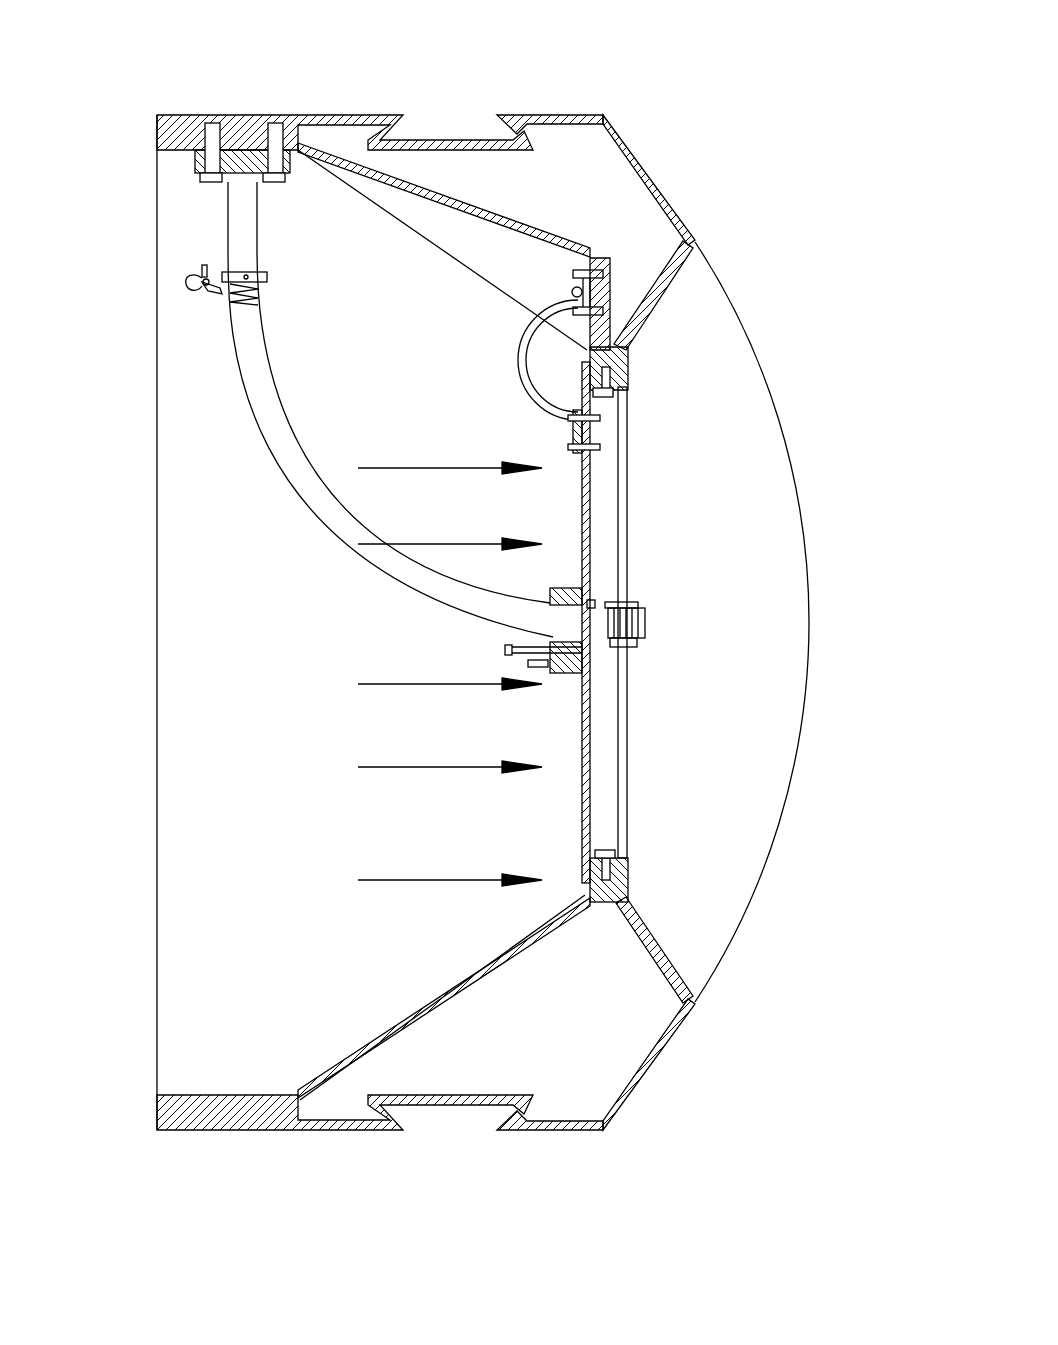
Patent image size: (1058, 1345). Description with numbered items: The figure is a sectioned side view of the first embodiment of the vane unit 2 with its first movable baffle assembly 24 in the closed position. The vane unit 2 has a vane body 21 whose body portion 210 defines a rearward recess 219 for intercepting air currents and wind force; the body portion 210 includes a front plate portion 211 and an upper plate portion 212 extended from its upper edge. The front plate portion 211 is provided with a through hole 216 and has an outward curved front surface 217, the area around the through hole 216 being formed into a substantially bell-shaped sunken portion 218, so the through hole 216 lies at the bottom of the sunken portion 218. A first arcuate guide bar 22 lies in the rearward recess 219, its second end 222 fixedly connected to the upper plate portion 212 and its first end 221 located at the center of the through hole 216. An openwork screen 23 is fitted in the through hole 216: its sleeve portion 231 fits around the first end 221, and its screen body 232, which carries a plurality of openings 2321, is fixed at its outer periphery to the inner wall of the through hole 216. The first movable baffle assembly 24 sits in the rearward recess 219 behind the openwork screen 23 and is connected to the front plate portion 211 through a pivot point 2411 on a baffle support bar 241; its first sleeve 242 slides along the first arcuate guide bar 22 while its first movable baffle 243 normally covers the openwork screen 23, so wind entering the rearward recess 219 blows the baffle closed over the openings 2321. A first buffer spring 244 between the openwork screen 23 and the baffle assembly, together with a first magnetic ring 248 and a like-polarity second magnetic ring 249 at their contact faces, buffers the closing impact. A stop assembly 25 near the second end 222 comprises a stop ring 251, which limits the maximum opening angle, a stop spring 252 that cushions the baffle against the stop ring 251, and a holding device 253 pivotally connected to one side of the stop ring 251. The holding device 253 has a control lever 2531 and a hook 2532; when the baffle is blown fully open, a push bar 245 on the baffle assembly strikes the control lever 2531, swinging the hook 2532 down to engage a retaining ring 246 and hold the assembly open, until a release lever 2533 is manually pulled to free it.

The vane unit 2 is at (652, 82).
The vane body 21 is at (702, 208).
The body portion 210 is at (660, 186).
The front plate portion 211 is at (632, 362).
The upper plate portion 212 is at (372, 115).
The through hole 216 is at (632, 392).
The outward curved front surface 217 is at (724, 292).
The sunken portion 218 is at (745, 430).
The rearward recess 219 is at (258, 548).
The first arcuate guide bar 22 is at (228, 380).
The first end 221 is at (646, 623).
The second end 222 is at (238, 190).
The openwork screen 23 is at (636, 558).
The sleeve portion 231 is at (636, 645).
The screen body 232 is at (634, 760).
The openings 2321 is at (626, 700).
The first movable baffle assembly 24 is at (574, 470).
The baffle support bar 241 is at (522, 340).
The pivot point 2411 is at (612, 292).
The first sleeve 242 is at (562, 590).
The first movable baffle 243 is at (594, 530).
The first buffer spring 244 is at (624, 606).
The push bar 245 is at (508, 649).
The retaining ring 246 is at (530, 663).
The first magnetic ring 248 is at (596, 600).
The second magnetic ring 249 is at (594, 660).
The stop assembly 25 is at (262, 276).
The stop ring 251 is at (268, 282).
The stop spring 252 is at (264, 300).
The holding device 253 is at (193, 262).
The control lever 2531 is at (215, 295).
The hook 2532 is at (186, 290).
The release lever 2533 is at (205, 265).